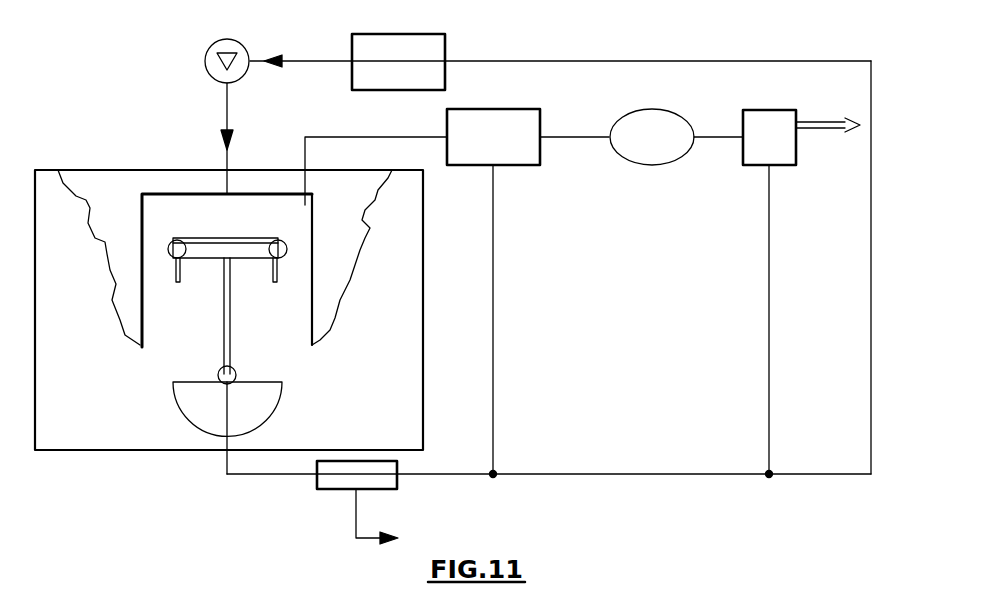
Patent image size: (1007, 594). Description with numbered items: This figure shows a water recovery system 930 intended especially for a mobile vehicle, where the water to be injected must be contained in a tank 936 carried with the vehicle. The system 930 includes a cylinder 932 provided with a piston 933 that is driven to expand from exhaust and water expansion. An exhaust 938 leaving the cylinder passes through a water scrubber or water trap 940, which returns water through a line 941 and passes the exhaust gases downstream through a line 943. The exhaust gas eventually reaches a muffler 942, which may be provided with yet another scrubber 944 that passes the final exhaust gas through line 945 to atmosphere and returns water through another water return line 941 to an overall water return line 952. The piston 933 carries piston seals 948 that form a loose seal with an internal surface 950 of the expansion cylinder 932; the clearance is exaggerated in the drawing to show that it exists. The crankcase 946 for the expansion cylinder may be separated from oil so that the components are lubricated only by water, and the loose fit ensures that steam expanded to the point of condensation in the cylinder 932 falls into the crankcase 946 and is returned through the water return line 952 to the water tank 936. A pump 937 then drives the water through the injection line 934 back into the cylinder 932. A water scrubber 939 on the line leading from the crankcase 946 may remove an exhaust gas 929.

The exhaust gas 929 is at (366, 538).
The water recovery system 930 is at (753, 497).
The cylinder 932 is at (118, 205).
The piston 933 is at (218, 250).
The injection line 934 is at (222, 124).
The tank 936 is at (377, 45).
The pump 937 is at (213, 47).
The exhaust 938 is at (342, 136).
The water scrubber 939 is at (338, 490).
The water scrubber or water trap 940 is at (505, 120).
The water return line 941 is at (493, 284).
The muffler 942 is at (640, 152).
The line 943 is at (562, 136).
The scrubber 944 is at (782, 160).
The line 945 is at (826, 124).
The crankcase 946 is at (195, 405).
The piston seals 948 is at (172, 250).
The internal surface 950 is at (322, 278).
The water return line 952 is at (871, 323).